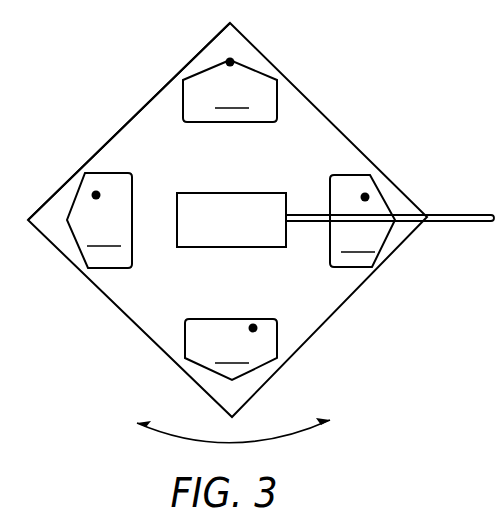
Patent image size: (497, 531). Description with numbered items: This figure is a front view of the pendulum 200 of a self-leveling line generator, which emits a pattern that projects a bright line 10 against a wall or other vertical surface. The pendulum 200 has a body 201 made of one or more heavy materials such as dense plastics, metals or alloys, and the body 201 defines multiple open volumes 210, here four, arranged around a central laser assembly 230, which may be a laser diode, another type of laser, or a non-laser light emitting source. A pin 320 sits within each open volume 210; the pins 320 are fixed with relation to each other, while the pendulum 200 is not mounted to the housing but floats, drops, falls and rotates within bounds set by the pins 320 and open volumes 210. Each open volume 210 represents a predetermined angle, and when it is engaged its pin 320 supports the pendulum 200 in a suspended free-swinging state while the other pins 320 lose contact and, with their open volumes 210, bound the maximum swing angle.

The bright line 10 is at (462, 214).
The pendulum 200 is at (322, 108).
The body 201 is at (147, 124).
The open volumes 210 is at (231, 220).
The laser assembly 230 is at (231, 193).
The pins 320 is at (232, 62).